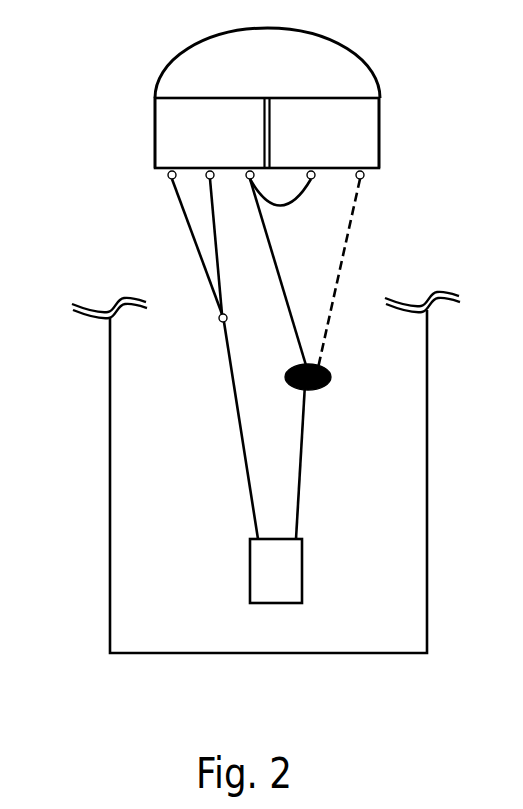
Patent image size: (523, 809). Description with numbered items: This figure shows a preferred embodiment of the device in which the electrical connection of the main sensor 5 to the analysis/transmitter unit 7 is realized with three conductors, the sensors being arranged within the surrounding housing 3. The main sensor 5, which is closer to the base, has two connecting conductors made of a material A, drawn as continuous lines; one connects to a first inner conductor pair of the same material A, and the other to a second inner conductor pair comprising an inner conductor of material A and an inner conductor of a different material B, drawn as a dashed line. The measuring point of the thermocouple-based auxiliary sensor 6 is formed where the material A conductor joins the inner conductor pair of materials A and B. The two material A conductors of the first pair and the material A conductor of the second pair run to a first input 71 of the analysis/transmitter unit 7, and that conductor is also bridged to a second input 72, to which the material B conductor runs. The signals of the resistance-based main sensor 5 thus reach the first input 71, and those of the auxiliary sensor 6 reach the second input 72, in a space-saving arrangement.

The analysis/transmitter unit 7 is at (138, 71).
The first input 71 is at (154, 168).
The second input 72 is at (380, 168).
The container 3 is at (101, 377).
The main sensor 5 is at (249, 593).
The auxiliary sensor 6 is at (334, 380).
The first material A is at (228, 268).
The second material B is at (350, 247).